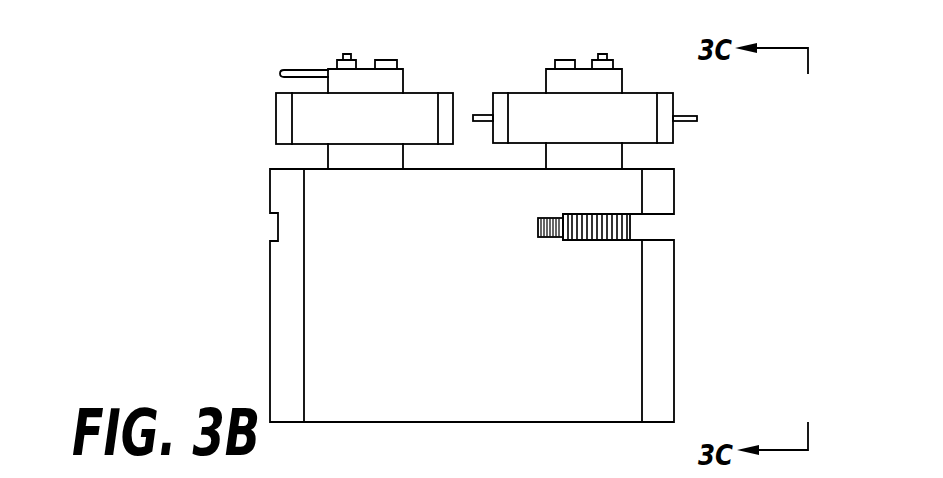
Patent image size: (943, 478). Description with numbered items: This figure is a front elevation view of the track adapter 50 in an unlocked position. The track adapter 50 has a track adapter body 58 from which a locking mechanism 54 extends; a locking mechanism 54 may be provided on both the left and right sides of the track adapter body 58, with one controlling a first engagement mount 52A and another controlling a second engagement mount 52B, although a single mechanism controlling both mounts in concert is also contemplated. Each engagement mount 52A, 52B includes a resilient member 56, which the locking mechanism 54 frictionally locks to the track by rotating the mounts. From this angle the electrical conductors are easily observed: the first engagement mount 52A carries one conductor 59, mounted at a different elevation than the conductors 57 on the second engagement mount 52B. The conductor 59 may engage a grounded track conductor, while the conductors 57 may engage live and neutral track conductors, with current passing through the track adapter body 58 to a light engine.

The track adapter 50 is at (240, 222).
The first engagement mount 52A is at (303, 86).
The second engagement mount 52B is at (619, 108).
The locking mechanism 54 is at (541, 231).
The resilient member 56 is at (280, 93).
The electrical conductors 57 is at (475, 116).
The track adapter body 58 is at (283, 298).
The electrical conductor 59 is at (288, 70).